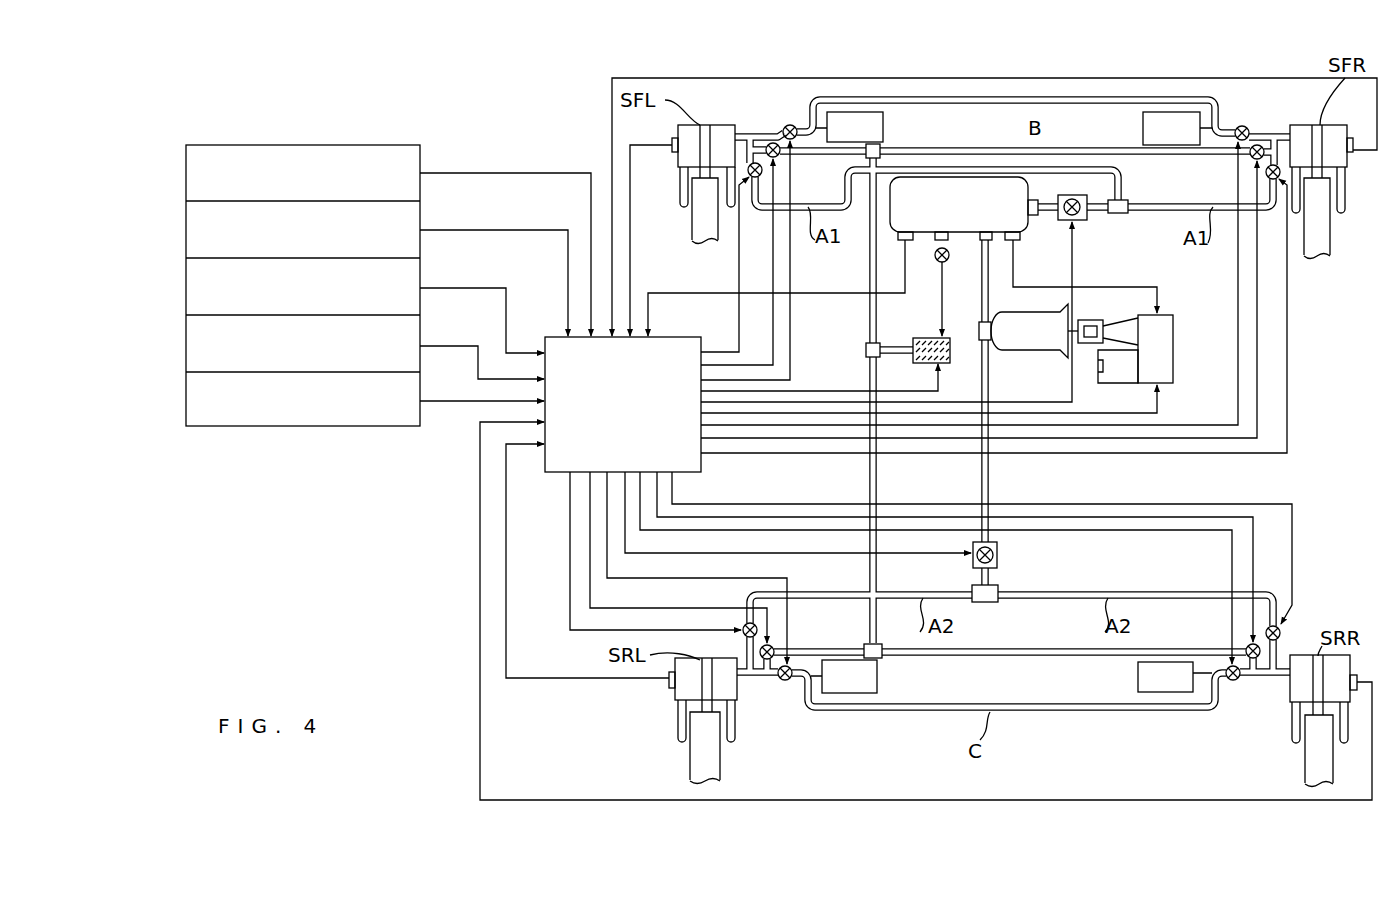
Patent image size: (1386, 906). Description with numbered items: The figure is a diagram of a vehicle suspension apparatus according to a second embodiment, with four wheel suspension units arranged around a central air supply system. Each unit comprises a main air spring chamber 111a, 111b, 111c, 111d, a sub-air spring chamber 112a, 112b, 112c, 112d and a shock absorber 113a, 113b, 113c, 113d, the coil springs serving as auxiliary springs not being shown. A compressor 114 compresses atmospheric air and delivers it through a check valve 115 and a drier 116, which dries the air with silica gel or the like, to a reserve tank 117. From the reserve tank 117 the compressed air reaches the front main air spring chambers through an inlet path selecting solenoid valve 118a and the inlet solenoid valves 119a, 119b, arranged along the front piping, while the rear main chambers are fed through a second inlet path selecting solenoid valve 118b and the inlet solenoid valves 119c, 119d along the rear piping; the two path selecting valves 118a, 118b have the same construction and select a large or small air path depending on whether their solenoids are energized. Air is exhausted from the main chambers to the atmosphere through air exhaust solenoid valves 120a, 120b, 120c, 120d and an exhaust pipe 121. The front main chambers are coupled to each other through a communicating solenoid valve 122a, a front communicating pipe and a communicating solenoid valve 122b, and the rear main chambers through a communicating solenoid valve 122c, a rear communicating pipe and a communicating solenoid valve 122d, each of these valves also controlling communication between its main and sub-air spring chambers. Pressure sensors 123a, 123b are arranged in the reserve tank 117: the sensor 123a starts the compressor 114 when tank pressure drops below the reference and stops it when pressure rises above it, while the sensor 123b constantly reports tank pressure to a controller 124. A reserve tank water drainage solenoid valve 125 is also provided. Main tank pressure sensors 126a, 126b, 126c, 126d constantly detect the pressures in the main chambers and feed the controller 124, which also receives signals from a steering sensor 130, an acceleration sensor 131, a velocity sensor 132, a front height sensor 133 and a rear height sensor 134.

The main air spring chamber 111a is at (1297, 215).
The main air spring chamber 111b is at (682, 200).
The main air spring chamber 111c is at (1300, 727).
The main air spring chamber 111d is at (678, 735).
The sub-air spring chamber 112a is at (1143, 128).
The sub-air spring chamber 112b is at (885, 128).
The sub-air spring chamber 112c is at (1138, 677).
The sub-air spring chamber 112d is at (880, 685).
The shock absorber 113a is at (1320, 257).
The shock absorber 113b is at (706, 243).
The shock absorber 113c is at (1305, 778).
The shock absorber 113d is at (722, 776).
The compressor 114 is at (1173, 350).
The check valve 115 is at (1088, 344).
The drier 116 is at (1040, 350).
The reserve tank 117 is at (1028, 185).
The inlet path selecting solenoid valve 118a is at (1087, 215).
The inlet path selecting solenoid valve 118b is at (1000, 553).
The inlet solenoid valve 119a is at (1278, 165).
The inlet solenoid valve 119b is at (748, 162).
The inlet solenoid valve 119c is at (1280, 626).
The inlet solenoid valve 119d is at (745, 622).
The air exhaust solenoid valve 120a is at (1258, 145).
The air exhaust solenoid valve 120b is at (773, 142).
The air exhaust solenoid valve 120c is at (1250, 670).
The air exhaust solenoid valve 120d is at (775, 651).
The exhaust pipe 121 is at (945, 363).
The communicating solenoid valve 122a is at (1240, 126).
The communicating solenoid valve 122b is at (792, 125).
The communicating solenoid valve 122c is at (1230, 681).
The communicating solenoid valve 122d is at (786, 682).
The pressure sensor 123a is at (1018, 240).
The pressure sensor 123b is at (912, 243).
The controller 124 is at (560, 474).
The reserve tank water drainage solenoid valve 125 is at (950, 258).
The main tank pressure sensor 126a is at (1353, 152).
The main tank pressure sensor 126b is at (672, 143).
The main tank pressure sensor 126c is at (1357, 680).
The main tank pressure sensor 126d is at (668, 682).
The steering sensor 130 is at (425, 158).
The acceleration sensor 131 is at (425, 216).
The velocity sensor 132 is at (425, 277).
The front height sensor 133 is at (425, 335).
The rear height sensor 134 is at (372, 428).